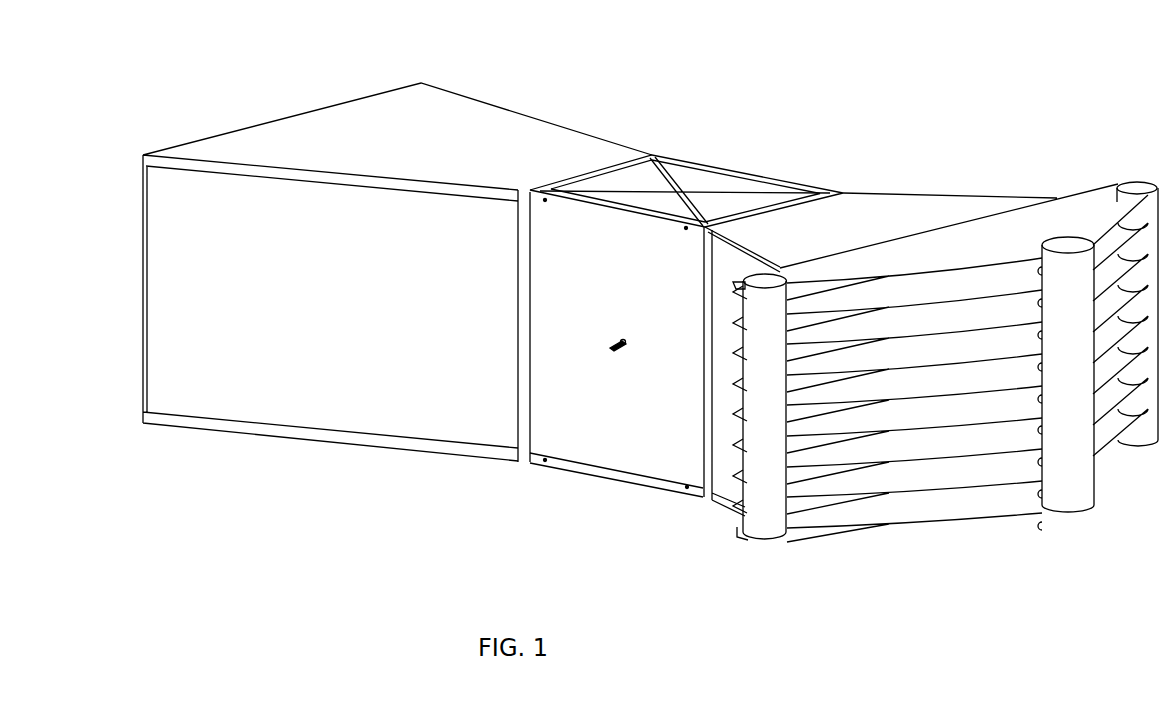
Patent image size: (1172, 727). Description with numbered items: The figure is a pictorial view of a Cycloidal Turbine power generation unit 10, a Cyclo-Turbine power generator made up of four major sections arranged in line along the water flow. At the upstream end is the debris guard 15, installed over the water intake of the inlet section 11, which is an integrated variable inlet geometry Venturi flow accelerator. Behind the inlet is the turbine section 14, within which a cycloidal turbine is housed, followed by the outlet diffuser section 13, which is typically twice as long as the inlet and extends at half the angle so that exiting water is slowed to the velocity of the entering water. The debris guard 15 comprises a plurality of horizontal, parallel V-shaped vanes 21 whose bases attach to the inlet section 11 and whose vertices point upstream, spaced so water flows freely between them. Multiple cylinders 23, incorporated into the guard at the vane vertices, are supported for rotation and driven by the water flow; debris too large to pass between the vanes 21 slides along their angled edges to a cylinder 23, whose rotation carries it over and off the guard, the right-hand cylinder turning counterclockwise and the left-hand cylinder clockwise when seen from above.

The Cycloidal Turbine power generation unit 10 is at (718, 135).
The inlet section 11 is at (945, 180).
The outlet diffuser section 13 is at (499, 95).
The turbine section 14 is at (598, 483).
The debris guard 15 is at (943, 523).
The vanes 21 is at (880, 488).
The cylinders 23 is at (1145, 180).